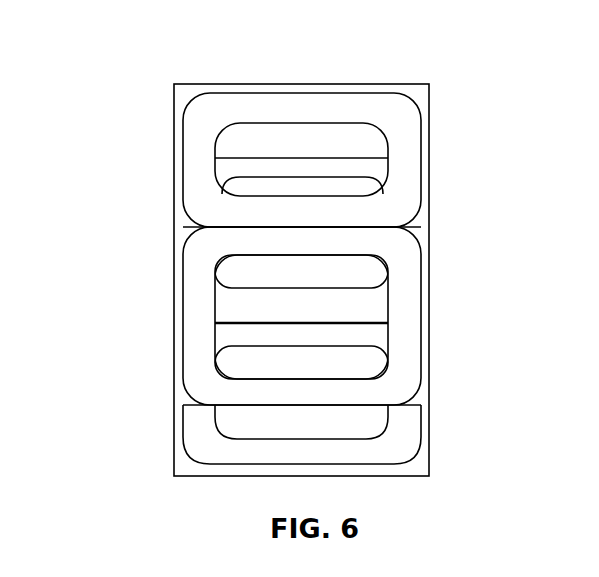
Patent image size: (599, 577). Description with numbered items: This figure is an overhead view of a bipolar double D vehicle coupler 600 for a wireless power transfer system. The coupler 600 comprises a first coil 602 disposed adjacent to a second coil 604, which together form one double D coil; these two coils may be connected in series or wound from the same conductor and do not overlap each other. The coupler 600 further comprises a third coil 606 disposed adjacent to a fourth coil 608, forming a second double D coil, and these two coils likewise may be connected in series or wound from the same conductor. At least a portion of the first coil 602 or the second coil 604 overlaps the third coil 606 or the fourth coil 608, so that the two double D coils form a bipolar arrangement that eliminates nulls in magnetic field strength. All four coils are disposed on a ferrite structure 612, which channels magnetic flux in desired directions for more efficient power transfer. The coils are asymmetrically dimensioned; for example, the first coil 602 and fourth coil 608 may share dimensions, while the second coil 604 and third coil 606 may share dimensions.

The bipolar double D vehicle coupler 600 is at (145, 60).
The first coil 602 is at (187, 140).
The second coil 604 is at (188, 296).
The third coil 606 is at (417, 228).
The fourth coil 608 is at (413, 426).
The ferrite structure 612 is at (420, 90).